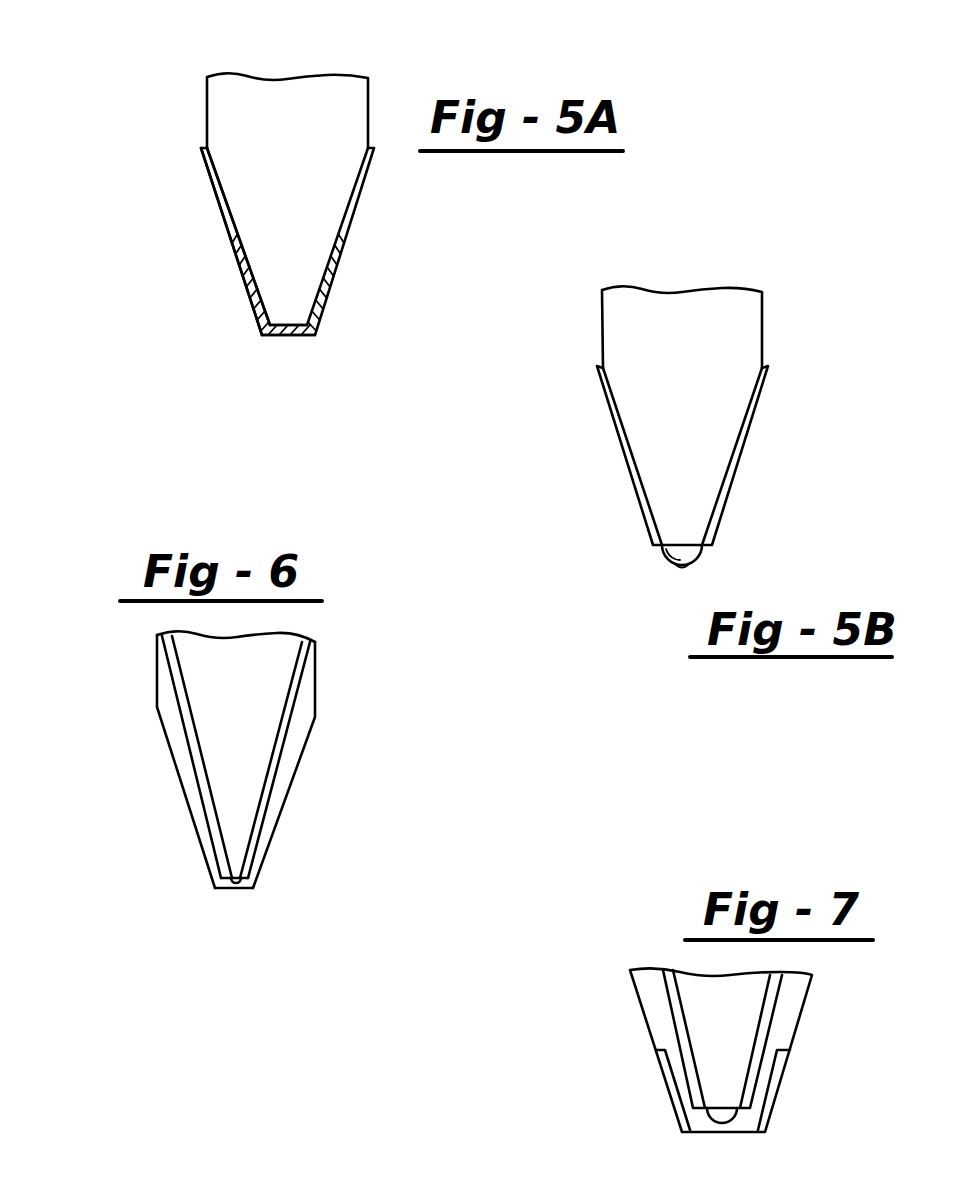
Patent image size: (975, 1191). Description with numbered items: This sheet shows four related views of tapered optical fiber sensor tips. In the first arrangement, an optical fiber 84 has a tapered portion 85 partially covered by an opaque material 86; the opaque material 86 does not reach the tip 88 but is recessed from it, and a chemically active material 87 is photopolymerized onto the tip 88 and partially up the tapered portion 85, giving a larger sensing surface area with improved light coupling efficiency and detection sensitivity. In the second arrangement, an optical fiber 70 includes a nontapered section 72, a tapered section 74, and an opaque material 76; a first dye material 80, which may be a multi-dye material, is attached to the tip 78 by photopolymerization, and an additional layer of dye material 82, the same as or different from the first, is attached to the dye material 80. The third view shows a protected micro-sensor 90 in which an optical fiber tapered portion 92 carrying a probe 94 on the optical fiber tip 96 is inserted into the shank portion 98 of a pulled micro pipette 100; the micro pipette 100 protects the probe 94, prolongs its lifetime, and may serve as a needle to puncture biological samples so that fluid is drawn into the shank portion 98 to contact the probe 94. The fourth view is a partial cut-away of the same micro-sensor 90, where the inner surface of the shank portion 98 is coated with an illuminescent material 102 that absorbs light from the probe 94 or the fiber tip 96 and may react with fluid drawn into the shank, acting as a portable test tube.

In FIG. 5B, the optical fiber 70 is at (783, 325).
In FIG. 5B, the nontapered section 72 is at (763, 312).
In FIG. 5B, the tapered section 74 is at (763, 403).
In FIG. 5B, the opaque material 76 is at (615, 413).
In FIG. 5B, the tip 78 is at (702, 548).
In FIG. 5B, the first dye material 80 is at (670, 549).
In FIG. 5B, the additional layer of dye material 82 is at (682, 569).
In FIG. 5A, the optical fiber 84 is at (368, 103).
In FIG. 5A, the tapered portion 85 is at (350, 200).
In FIG. 5A, the opaque material 86 is at (223, 213).
In FIG. 5A, the chemically active material 87 is at (332, 285).
In FIG. 5A, the tip 88 is at (293, 327).
In FIG. 6, the protected micro-sensor 90 is at (345, 678).
In FIG. 6, the optical fiber tapered portion 92 is at (187, 730).
In FIG. 7, the optical fiber tapered portion 92 is at (673, 1003).
In FIG. 6, the probe 94 is at (237, 888).
In FIG. 7, the probe 94 is at (725, 1117).
In FIG. 6, the optical fiber tip 96 is at (233, 877).
In FIG. 6, the shank portion 98 is at (283, 823).
In FIG. 7, the shank portion 98 is at (800, 1027).
In FIG. 6, the micro pipette 100 is at (157, 680).
In FIG. 7, the illuminescent material 102 is at (672, 1087).